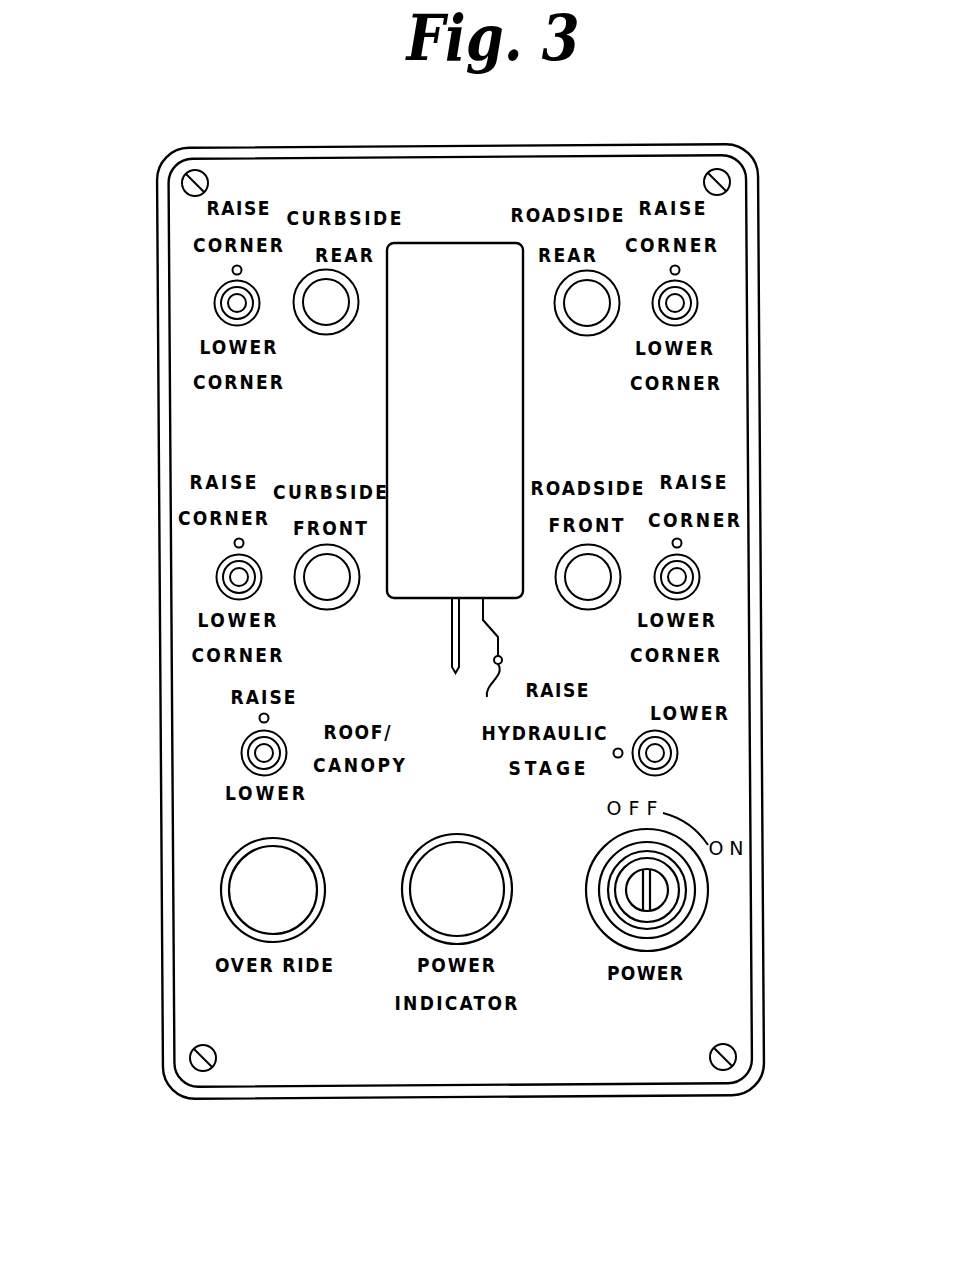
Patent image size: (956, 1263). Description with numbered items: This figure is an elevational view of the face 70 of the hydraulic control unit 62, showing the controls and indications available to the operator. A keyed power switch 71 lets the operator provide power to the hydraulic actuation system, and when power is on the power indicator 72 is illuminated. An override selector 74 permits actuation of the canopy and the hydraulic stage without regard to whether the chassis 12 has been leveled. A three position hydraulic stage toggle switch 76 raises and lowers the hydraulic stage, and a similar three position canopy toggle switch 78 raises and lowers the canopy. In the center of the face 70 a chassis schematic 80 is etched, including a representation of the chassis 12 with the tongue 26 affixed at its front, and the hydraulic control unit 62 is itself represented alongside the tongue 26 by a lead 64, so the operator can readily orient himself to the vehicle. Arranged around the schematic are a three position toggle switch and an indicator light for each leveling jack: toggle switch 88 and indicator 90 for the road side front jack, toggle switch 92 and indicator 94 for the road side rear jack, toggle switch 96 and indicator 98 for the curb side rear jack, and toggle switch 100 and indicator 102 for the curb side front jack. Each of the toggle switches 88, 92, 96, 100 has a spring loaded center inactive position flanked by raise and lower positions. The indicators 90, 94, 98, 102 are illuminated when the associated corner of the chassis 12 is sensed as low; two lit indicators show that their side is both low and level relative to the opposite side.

The face 70 is at (333, 126).
The chassis 12 is at (416, 382).
The chassis schematic 80 is at (473, 243).
The tongue 26 is at (452, 643).
The hydraulic control unit 62 is at (474, 687).
The wire 64 is at (498, 637).
The keyed power switch 71 is at (710, 924).
The power indicator 72 is at (506, 923).
The override selector 74 is at (224, 864).
The hydraulic stage toggle switch 76 is at (677, 755).
The canopy toggle switch 78 is at (243, 748).
The toggle switch 88 is at (699, 578).
The indicator 90 is at (580, 590).
The toggle switch 92 is at (697, 301).
The indicator 94 is at (576, 318).
The toggle switch 96 is at (215, 300).
The indicator 98 is at (330, 318).
The toggle switch 100 is at (217, 572).
The indicator 102 is at (334, 597).